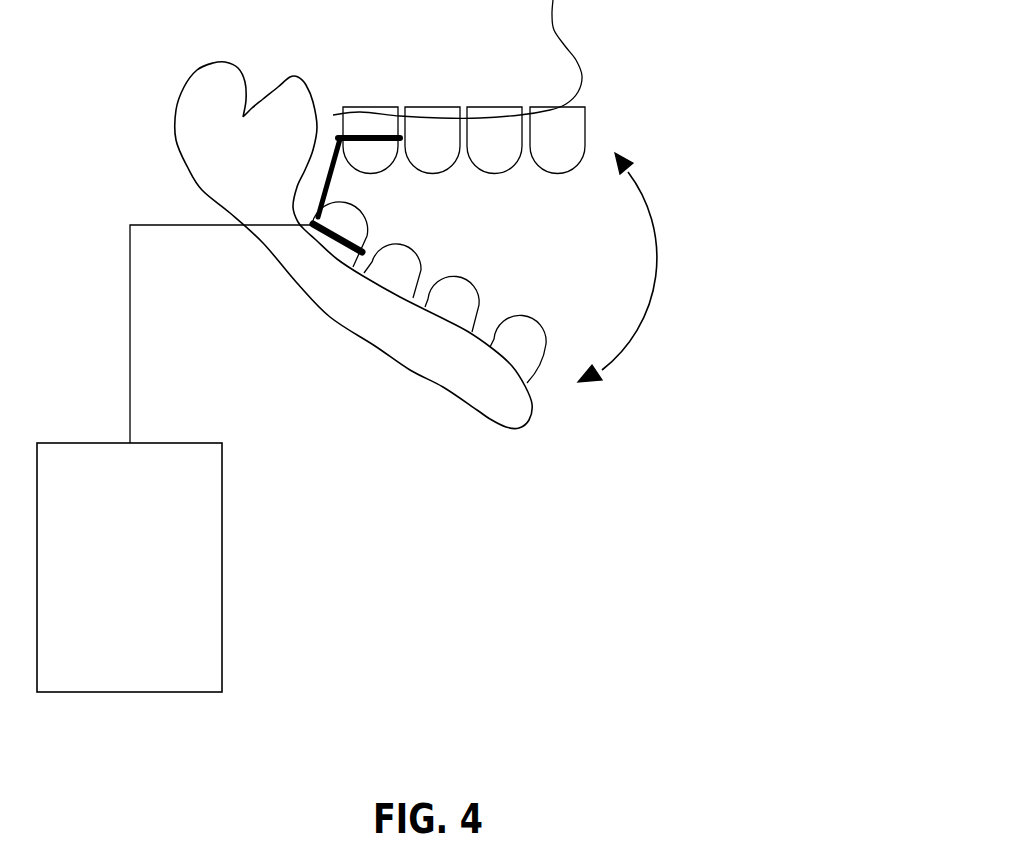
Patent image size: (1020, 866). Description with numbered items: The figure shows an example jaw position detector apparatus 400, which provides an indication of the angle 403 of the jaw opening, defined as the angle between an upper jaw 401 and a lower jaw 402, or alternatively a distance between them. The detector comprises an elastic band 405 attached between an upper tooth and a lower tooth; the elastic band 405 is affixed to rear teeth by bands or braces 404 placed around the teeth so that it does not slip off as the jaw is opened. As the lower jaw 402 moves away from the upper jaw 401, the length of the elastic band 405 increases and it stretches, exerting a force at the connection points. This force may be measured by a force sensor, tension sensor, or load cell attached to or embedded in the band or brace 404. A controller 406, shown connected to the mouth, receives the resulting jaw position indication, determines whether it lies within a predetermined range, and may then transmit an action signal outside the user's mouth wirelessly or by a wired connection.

The jaw position detector apparatus 400 is at (798, 75).
The upper jaw 401 is at (582, 73).
The lower jaw 402 is at (507, 428).
The angle of the jaw opening 403 is at (655, 280).
The band or brace 404 is at (364, 250).
The elastic band 405 is at (330, 167).
The controller 406 is at (174, 458).